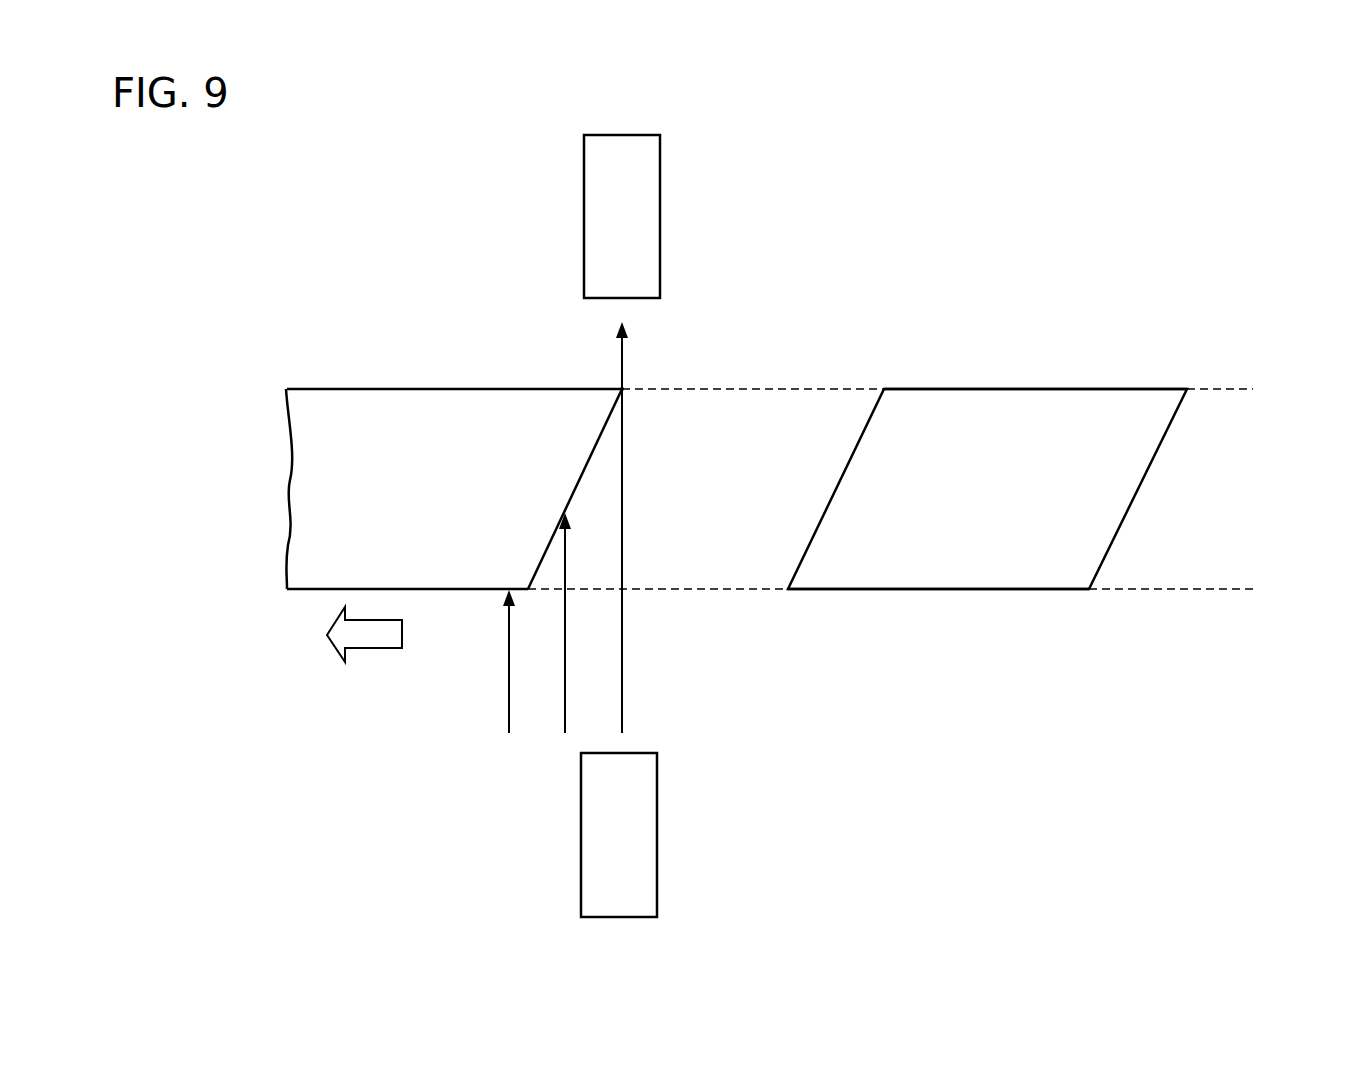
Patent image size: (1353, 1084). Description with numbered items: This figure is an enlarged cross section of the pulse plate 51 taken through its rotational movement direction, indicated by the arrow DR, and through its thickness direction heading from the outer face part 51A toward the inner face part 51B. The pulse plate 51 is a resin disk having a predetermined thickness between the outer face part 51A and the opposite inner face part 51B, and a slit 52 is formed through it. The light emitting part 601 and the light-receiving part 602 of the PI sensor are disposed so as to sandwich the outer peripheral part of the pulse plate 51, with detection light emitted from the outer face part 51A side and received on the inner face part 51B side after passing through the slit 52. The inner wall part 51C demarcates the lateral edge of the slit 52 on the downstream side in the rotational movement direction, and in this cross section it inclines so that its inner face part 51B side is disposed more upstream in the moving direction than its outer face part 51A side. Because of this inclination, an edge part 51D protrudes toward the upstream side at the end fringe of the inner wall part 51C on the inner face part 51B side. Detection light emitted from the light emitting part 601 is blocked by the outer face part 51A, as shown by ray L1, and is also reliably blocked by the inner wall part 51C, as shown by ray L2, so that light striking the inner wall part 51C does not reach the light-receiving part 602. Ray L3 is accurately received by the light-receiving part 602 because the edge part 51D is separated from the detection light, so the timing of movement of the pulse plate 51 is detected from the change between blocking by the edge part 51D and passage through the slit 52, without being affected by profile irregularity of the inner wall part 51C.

The pulse plate 51 is at (1077, 437).
The outer face part 51A is at (455, 592).
The inner face part 51B is at (400, 389).
The inner wall part 51C is at (575, 480).
The edge part 51D is at (617, 391).
The slit 52 is at (706, 445).
The light emitting part 601 is at (641, 865).
The light-receiving part 602 is at (643, 178).
The detection light blocked by outer face part L1 is at (508, 692).
The detection light blocked by inner wall part L2 is at (565, 698).
The detection light received by light-receiving part L3 is at (623, 670).
The rotational movement direction DR is at (370, 650).